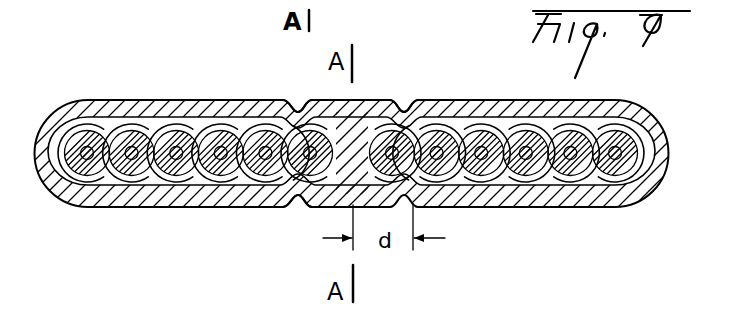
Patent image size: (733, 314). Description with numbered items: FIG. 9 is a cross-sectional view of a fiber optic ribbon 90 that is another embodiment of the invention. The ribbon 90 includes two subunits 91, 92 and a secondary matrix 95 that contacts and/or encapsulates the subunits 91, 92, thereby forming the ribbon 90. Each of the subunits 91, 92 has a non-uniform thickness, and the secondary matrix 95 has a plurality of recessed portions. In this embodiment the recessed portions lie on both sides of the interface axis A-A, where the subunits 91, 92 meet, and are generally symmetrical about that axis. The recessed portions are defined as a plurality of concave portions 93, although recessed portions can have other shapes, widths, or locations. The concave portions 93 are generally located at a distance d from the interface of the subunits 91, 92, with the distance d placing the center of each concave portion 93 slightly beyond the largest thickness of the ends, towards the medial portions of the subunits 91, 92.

The ribbon 90 is at (366, 150).
The subunit 91 is at (178, 135).
The subunit 92 is at (570, 130).
The concave portions 93 is at (291, 112).
The secondary matrix 95 is at (600, 104).